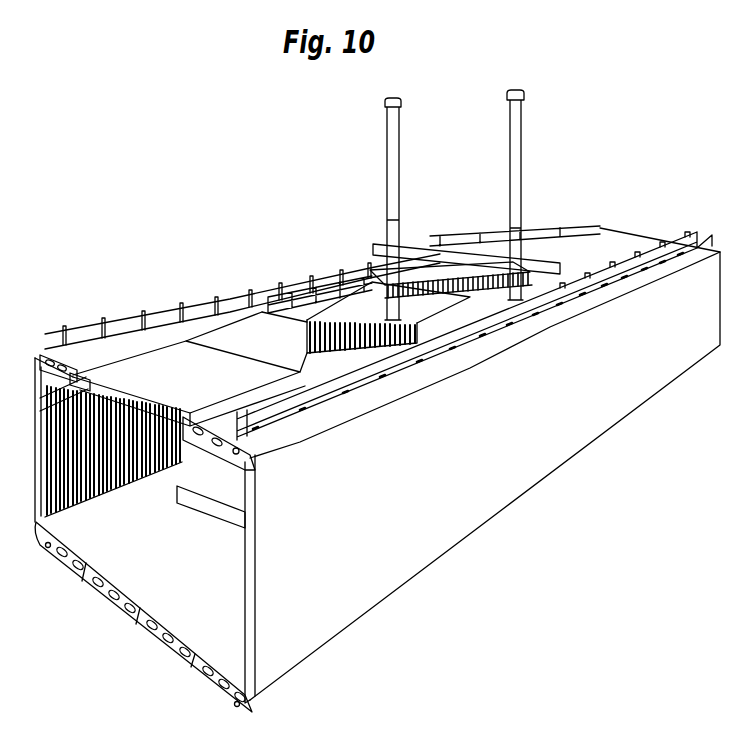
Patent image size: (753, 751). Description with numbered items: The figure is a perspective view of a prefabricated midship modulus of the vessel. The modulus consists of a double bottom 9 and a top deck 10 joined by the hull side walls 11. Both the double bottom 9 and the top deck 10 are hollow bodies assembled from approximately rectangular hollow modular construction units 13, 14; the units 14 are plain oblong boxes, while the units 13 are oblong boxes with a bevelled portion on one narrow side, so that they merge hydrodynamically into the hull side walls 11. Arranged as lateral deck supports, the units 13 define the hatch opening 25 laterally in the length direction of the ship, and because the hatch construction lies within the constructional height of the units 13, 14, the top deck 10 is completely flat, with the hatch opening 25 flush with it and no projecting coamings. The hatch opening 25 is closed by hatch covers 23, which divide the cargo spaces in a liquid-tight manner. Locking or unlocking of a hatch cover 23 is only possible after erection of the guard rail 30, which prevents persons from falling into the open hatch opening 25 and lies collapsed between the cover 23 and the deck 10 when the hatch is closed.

The double bottom 9 is at (107, 635).
The top deck 10 is at (124, 306).
The hull side walls 11 is at (88, 468).
The hollow modular construction unit 13 is at (48, 350).
The hollow modular construction unit 14 is at (115, 592).
The hatch cover 23 is at (186, 392).
The hatch opening 25 is at (605, 234).
The guard rail 30 is at (302, 302).